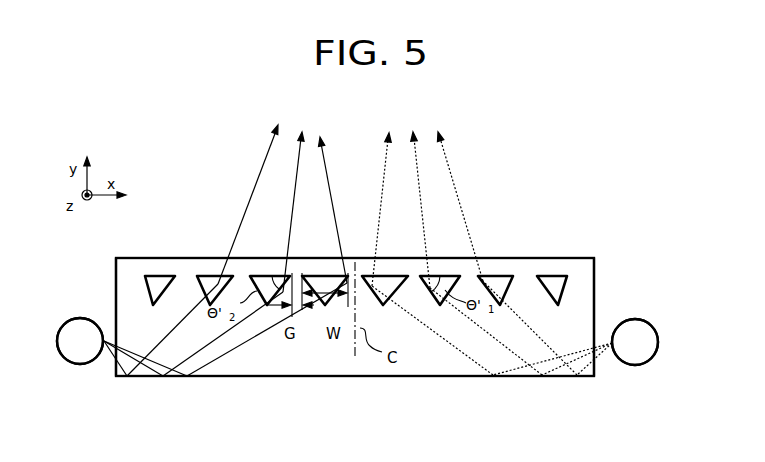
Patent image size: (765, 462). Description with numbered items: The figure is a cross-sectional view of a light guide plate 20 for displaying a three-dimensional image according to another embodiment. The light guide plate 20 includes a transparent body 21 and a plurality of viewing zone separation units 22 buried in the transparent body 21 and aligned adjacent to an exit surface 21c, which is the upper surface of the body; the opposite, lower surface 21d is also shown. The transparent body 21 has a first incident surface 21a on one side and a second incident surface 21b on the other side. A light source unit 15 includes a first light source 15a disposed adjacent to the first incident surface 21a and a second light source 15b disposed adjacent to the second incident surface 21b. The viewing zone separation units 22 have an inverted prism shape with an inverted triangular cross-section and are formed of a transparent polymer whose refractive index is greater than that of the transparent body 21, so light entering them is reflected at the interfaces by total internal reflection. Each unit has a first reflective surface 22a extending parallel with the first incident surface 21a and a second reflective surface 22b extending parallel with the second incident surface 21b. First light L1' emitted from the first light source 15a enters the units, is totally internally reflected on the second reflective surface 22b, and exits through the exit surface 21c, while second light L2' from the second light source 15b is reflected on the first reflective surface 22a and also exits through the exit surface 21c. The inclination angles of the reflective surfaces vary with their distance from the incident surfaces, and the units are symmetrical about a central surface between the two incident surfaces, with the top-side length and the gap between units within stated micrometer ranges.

The light guide plate 20 is at (606, 221).
The transparent body 21 is at (600, 268).
The first incident surface 21a is at (115, 293).
The second incident surface 21b is at (596, 288).
The exit surface 21c is at (355, 257).
The lower surface of light guide plate 21d is at (448, 377).
The viewing zone separation units 22 is at (218, 271).
The first reflective surface 22a is at (152, 275).
The second reflective surface 22b is at (486, 275).
The light source unit 15 is at (655, 378).
The first light source 15a is at (66, 362).
The second light source 15b is at (658, 344).
The first light L1' is at (225, 250).
The second light L2' is at (492, 253).